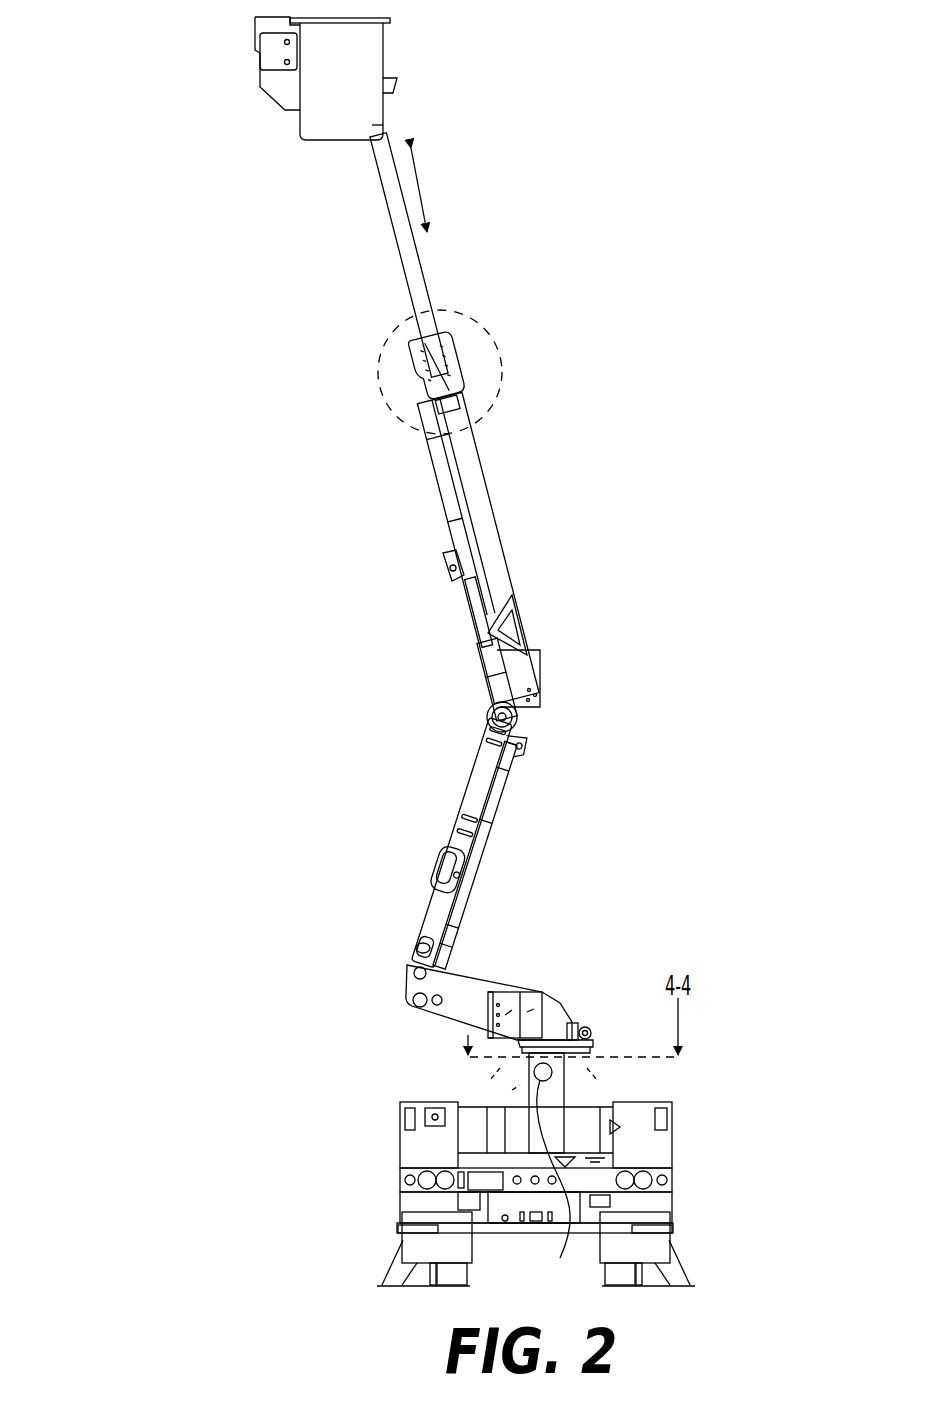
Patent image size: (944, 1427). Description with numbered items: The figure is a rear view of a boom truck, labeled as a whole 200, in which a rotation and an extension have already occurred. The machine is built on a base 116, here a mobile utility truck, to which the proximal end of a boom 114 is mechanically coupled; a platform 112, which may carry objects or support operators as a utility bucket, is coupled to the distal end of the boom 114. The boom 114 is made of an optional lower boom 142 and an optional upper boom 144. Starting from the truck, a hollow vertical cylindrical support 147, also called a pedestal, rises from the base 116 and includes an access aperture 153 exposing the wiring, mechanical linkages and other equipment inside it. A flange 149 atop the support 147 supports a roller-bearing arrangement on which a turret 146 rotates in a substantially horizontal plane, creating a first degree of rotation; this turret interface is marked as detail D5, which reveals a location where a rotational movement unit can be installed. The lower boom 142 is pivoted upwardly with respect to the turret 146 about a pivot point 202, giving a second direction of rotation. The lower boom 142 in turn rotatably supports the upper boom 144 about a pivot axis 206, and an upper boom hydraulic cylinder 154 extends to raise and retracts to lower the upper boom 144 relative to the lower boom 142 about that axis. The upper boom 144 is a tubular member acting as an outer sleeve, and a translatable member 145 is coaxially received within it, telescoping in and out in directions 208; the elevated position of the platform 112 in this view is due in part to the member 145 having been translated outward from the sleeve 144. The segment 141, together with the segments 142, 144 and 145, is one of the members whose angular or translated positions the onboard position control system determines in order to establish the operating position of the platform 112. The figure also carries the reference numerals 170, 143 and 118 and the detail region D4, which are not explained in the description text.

The aerial device 200 is at (126, 66).
The platform 112 is at (360, 58).
The platform attachment 170 is at (385, 120).
The directions 208 is at (420, 178).
The translatable member 145 is at (410, 262).
The detail region D4 is at (383, 355).
The boom coupling block 143 is at (475, 375).
The upper boom 144 is at (481, 520).
The upper boom hydraulic cylinder 154 is at (470, 668).
The pivot axis 206 is at (488, 716).
The lower boom 142 is at (470, 806).
The pivot point 202 is at (414, 972).
The segment 141 is at (460, 1015).
The turret 146 is at (578, 1008).
The detail D5 is at (545, 1007).
The hollow vertical cylindrical support 147 is at (560, 1093).
The flange 149 is at (528, 1058).
The base 116 is at (705, 1158).
The outriggers 118 is at (398, 1272).
The access aperture 153 is at (555, 1184).
The boom 114 is at (775, 486).